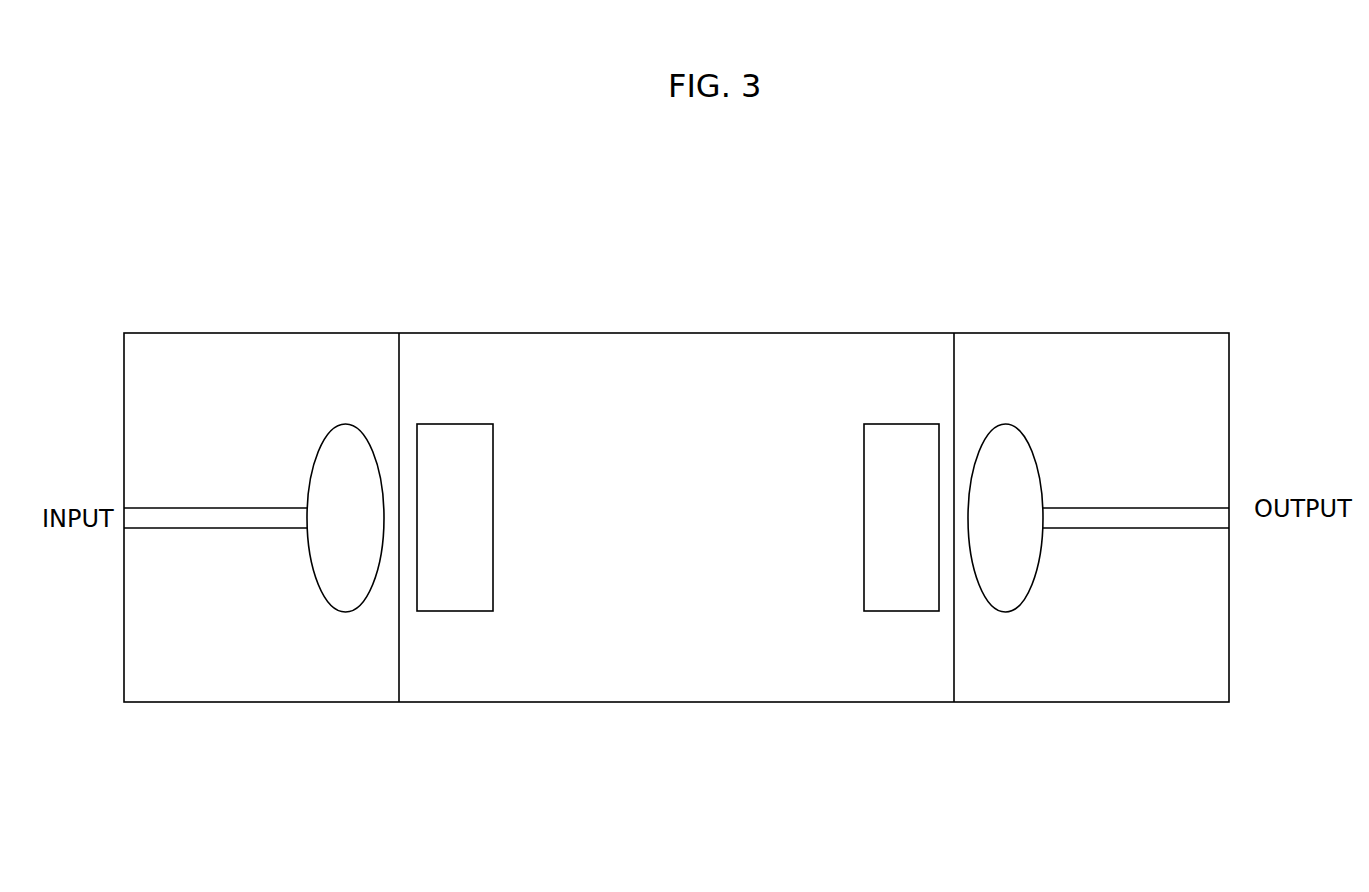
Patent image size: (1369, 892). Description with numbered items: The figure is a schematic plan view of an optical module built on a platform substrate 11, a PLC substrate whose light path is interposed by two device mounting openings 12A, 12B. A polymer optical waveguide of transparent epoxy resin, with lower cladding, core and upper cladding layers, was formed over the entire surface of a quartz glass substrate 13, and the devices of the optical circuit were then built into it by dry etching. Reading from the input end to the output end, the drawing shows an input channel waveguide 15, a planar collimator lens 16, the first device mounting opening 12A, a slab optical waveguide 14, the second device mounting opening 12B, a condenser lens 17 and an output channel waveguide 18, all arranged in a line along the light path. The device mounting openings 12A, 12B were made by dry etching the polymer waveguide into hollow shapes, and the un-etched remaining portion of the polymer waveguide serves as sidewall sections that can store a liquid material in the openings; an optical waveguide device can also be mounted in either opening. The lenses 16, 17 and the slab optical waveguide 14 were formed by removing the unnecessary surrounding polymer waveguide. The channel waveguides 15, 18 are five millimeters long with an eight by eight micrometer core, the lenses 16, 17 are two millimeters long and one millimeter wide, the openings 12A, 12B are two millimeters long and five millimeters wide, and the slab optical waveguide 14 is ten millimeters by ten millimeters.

The platform substrate 11 is at (211, 731).
The first device mounting opening 12A is at (477, 437).
The second device mounting opening 12B is at (875, 441).
The quartz glass substrate 13 is at (231, 357).
The slab optical waveguide 14 is at (440, 358).
The input channel waveguide 15 is at (193, 518).
The planar collimator lens 16 is at (331, 600).
The condenser lens 17 is at (1006, 599).
The output channel waveguide 18 is at (1170, 515).